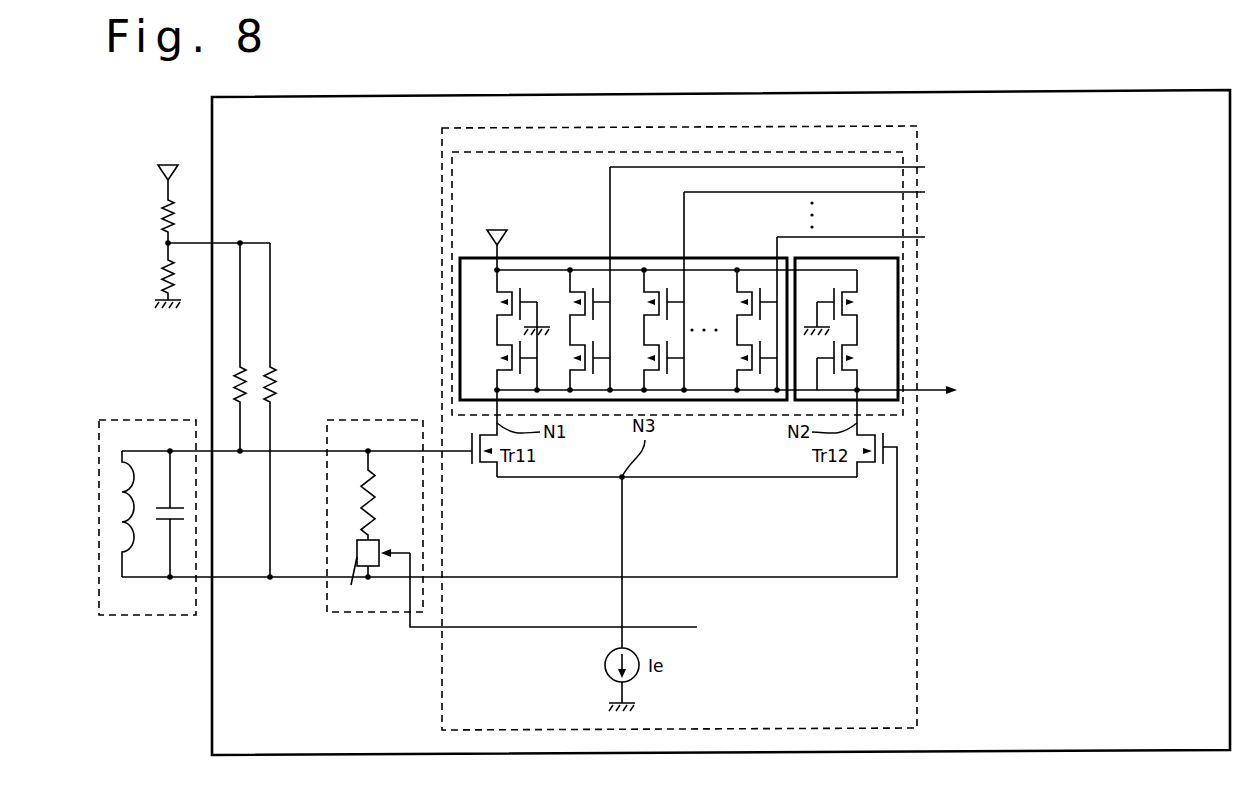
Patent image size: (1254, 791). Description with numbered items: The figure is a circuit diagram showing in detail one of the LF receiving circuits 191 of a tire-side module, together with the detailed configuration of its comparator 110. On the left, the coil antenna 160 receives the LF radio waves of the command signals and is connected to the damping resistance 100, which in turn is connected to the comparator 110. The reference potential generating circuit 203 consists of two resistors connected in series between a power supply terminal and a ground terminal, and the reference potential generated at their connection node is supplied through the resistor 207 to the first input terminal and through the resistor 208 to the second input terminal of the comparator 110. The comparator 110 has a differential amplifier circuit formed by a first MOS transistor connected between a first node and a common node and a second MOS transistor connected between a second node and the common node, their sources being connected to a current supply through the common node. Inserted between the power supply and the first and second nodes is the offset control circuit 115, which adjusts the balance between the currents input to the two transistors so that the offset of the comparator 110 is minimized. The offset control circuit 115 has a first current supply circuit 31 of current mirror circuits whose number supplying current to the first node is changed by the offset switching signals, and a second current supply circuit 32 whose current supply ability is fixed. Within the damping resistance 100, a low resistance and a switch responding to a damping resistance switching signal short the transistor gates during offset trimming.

The LF receiving circuit 191 is at (370, 96).
The offset control circuit 115 is at (675, 150).
The comparator 110 is at (917, 675).
The reference potential generating circuit 203 is at (156, 158).
The resistor 207 is at (243, 368).
The resistor 208 is at (278, 370).
The coil antenna 160 is at (146, 418).
The damping resistance 100 is at (368, 614).
The first current supply circuit 31 is at (545, 258).
The second current supply circuit 32 is at (845, 258).